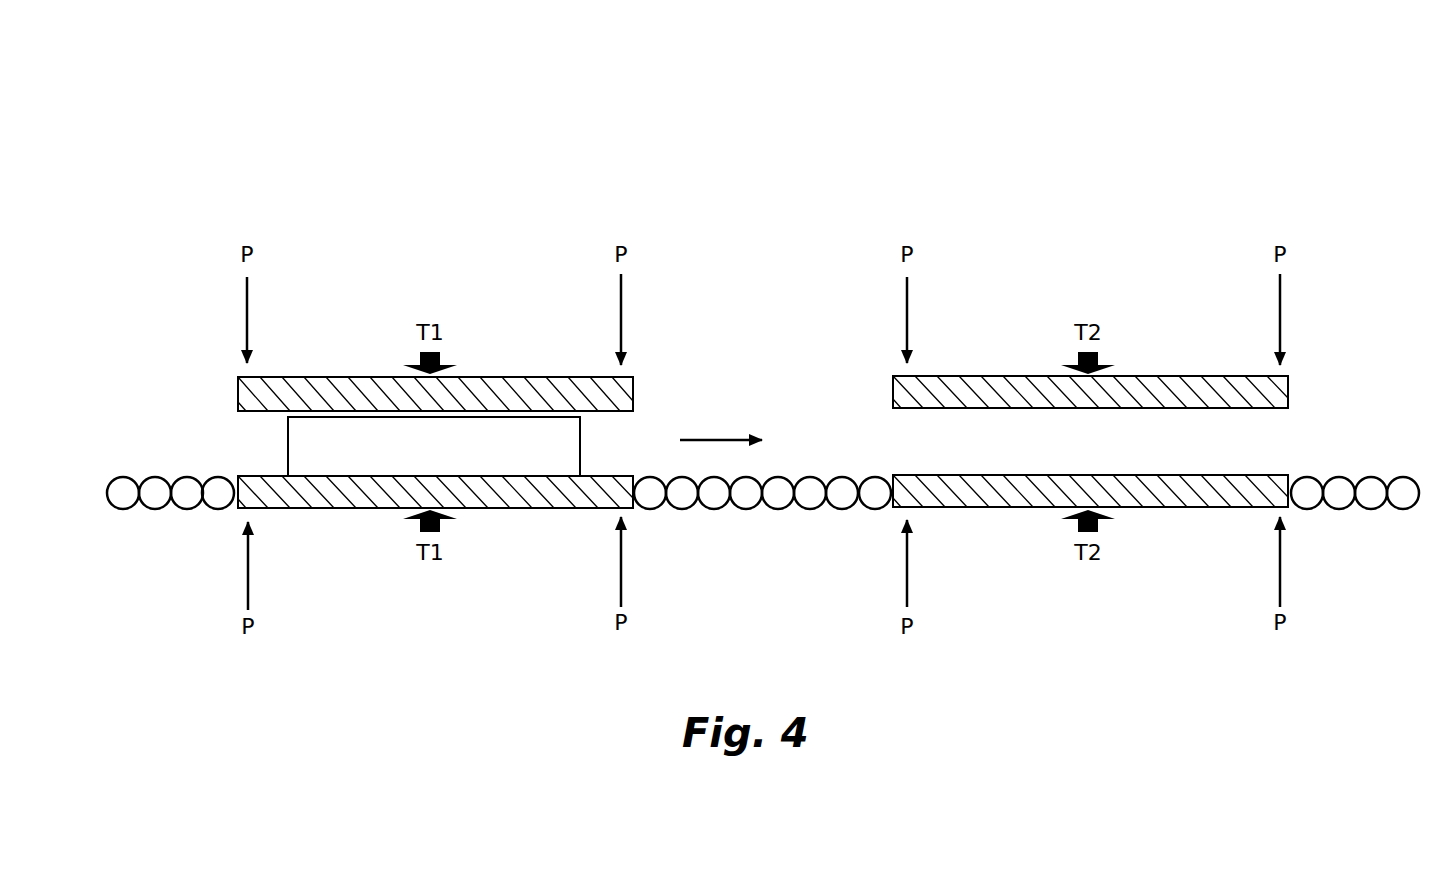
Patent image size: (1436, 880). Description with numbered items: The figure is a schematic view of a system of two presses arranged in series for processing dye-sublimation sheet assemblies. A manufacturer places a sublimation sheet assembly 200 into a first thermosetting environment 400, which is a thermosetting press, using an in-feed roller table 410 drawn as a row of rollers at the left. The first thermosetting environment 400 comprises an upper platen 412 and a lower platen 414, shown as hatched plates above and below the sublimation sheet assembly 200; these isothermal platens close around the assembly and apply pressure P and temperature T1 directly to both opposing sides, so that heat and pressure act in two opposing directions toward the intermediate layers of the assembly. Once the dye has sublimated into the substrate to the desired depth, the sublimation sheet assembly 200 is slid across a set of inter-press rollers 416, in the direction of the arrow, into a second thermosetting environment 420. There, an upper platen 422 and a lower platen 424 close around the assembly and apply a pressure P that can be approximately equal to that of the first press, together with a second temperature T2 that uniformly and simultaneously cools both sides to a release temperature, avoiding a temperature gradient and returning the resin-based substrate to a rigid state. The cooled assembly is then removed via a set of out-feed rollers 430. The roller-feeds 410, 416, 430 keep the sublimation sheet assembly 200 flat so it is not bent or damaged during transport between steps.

The first thermosetting environment 400 is at (433, 262).
The second thermosetting environment 420 is at (1089, 266).
The upper platen 412 is at (563, 390).
The lower platen 414 is at (315, 500).
The sublimation sheet assembly 200 is at (318, 440).
The upper platen 422 is at (987, 388).
The lower platen 424 is at (973, 493).
The in-feed roller table 410 is at (170, 522).
The inter-press rollers 416 is at (762, 520).
The out-feed rollers 430 is at (1380, 520).